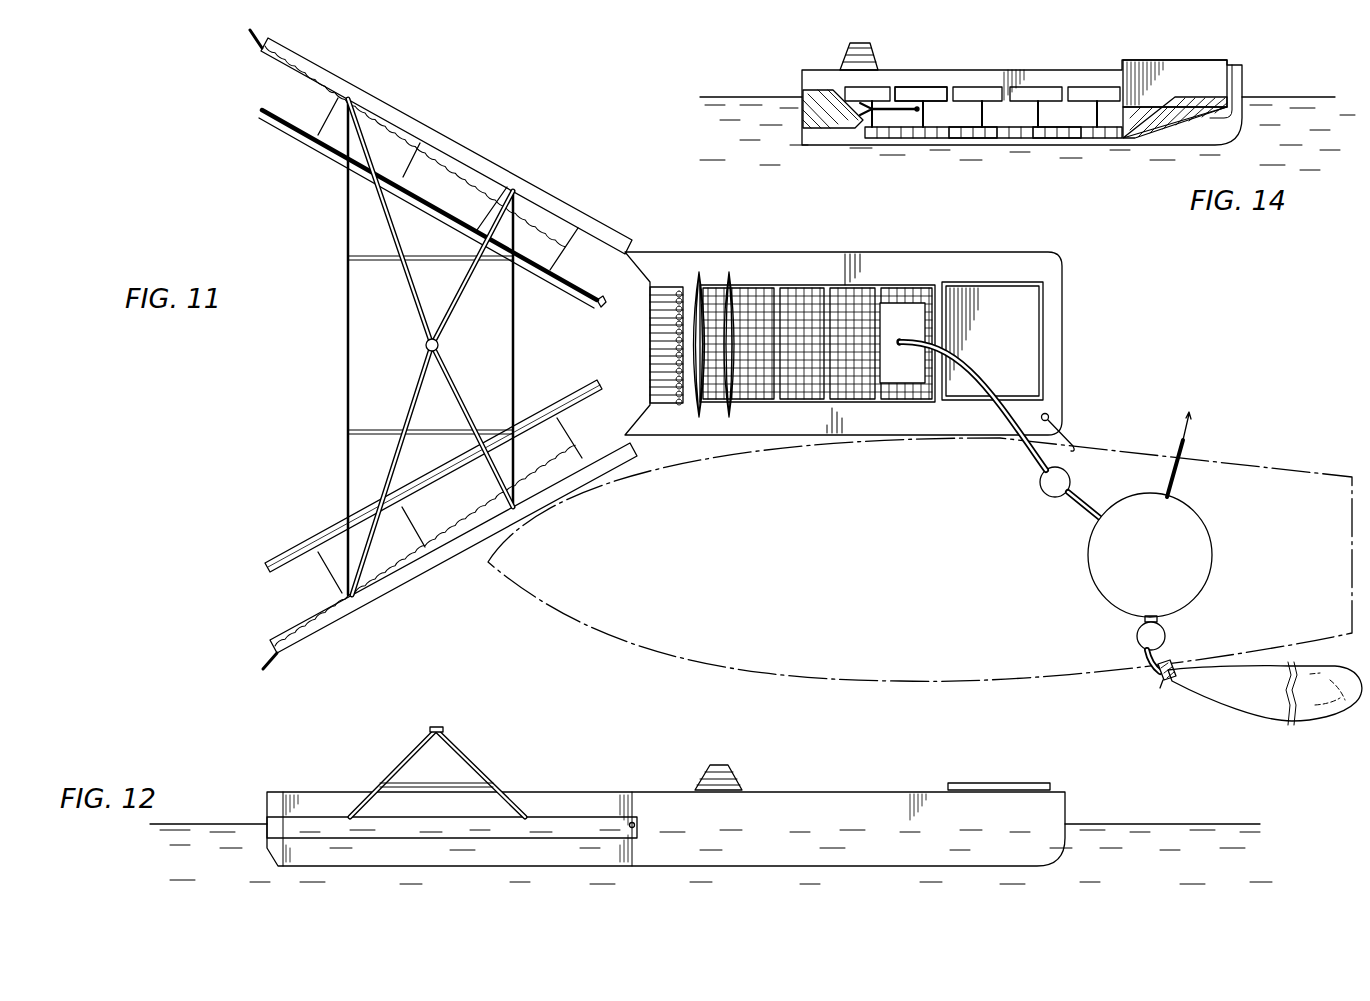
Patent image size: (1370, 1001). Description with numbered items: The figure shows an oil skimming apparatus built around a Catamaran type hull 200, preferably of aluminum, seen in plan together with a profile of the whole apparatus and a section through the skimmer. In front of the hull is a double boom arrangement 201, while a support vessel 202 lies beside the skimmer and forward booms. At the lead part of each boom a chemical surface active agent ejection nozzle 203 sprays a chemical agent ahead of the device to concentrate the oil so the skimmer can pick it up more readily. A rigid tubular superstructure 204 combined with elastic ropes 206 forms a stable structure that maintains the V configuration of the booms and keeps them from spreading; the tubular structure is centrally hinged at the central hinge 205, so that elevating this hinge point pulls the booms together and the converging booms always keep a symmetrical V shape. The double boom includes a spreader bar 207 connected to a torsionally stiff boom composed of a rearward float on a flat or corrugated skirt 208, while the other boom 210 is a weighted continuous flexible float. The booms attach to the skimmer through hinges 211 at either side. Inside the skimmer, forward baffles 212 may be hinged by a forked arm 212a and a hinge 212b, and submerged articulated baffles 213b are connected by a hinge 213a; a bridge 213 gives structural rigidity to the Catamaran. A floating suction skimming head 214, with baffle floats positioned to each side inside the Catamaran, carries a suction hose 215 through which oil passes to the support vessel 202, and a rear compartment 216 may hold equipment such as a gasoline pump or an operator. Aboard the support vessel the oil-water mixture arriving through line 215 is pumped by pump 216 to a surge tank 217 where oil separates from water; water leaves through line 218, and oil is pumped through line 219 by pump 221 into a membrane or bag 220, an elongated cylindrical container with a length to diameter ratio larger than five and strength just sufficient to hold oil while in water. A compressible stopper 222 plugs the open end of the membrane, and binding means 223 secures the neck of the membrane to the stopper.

In FIG. 11, the Catamaran type hull 200 is at (1018, 250).
In FIG. 14, the Catamaran type hull 200 is at (1027, 115).
In FIG. 12, the Catamaran type hull 200 is at (970, 860).
In FIG. 11, the double boom arrangement 201 is at (441, 110).
In FIG. 12, the double boom arrangement 201 is at (515, 753).
In FIG. 11, the support vessel 202 is at (922, 568).
In FIG. 11, the chemical surface active agent ejection nozzle 203 is at (256, 38).
In FIG. 11, the rigid tubular superstructure 204 is at (403, 255).
In FIG. 12, the rigid tubular superstructure 204 is at (403, 758).
In FIG. 11, the central hinge 205 is at (439, 345).
In FIG. 12, the central hinge 205 is at (441, 727).
In FIG. 11, the elastic ropes 206 is at (346, 392).
In FIG. 11, the spreader bar 207 is at (328, 98).
In FIG. 11, the flat or corrugated skirt 208 is at (523, 178).
In FIG. 11, the boom 210 is at (320, 153).
In FIG. 11, the hinges 211 is at (627, 252).
In FIG. 11, the forward baffles 212 is at (667, 297).
In FIG. 14, the forward baffles 212 is at (833, 118).
In FIG. 14, the forked arm 212a is at (886, 110).
In FIG. 14, the hinge 212b is at (917, 110).
In FIG. 11, the bridge 213 is at (745, 275).
In FIG. 14, the bridge 213 is at (847, 50).
In FIG. 12, the bridge 213 is at (735, 762).
In FIG. 14, the hinge 213a is at (1003, 138).
In FIG. 14, the submerged articulated baffles 213b is at (1050, 138).
In FIG. 11, the floating suction skimming head 214 is at (903, 305).
In FIG. 14, the floating suction skimming head 214 is at (930, 94).
In FIG. 11, the suction hose 215 is at (973, 417).
In FIG. 11, the compartment 216 is at (1030, 300).
In FIG. 14, the compartment 216 is at (1188, 70).
In FIG. 12, the compartment 216 is at (999, 786).
In FIG. 11, the surge tank 217 is at (1165, 567).
In FIG. 11, the water line 218 is at (1180, 477).
In FIG. 11, the oil line 219 is at (1160, 620).
In FIG. 11, the membrane or bag 220 is at (1252, 705).
In FIG. 11, the pump 221 is at (1136, 639).
In FIG. 11, the compressible stopper 222 is at (1155, 670).
In FIG. 11, the binding means 223 is at (1165, 684).